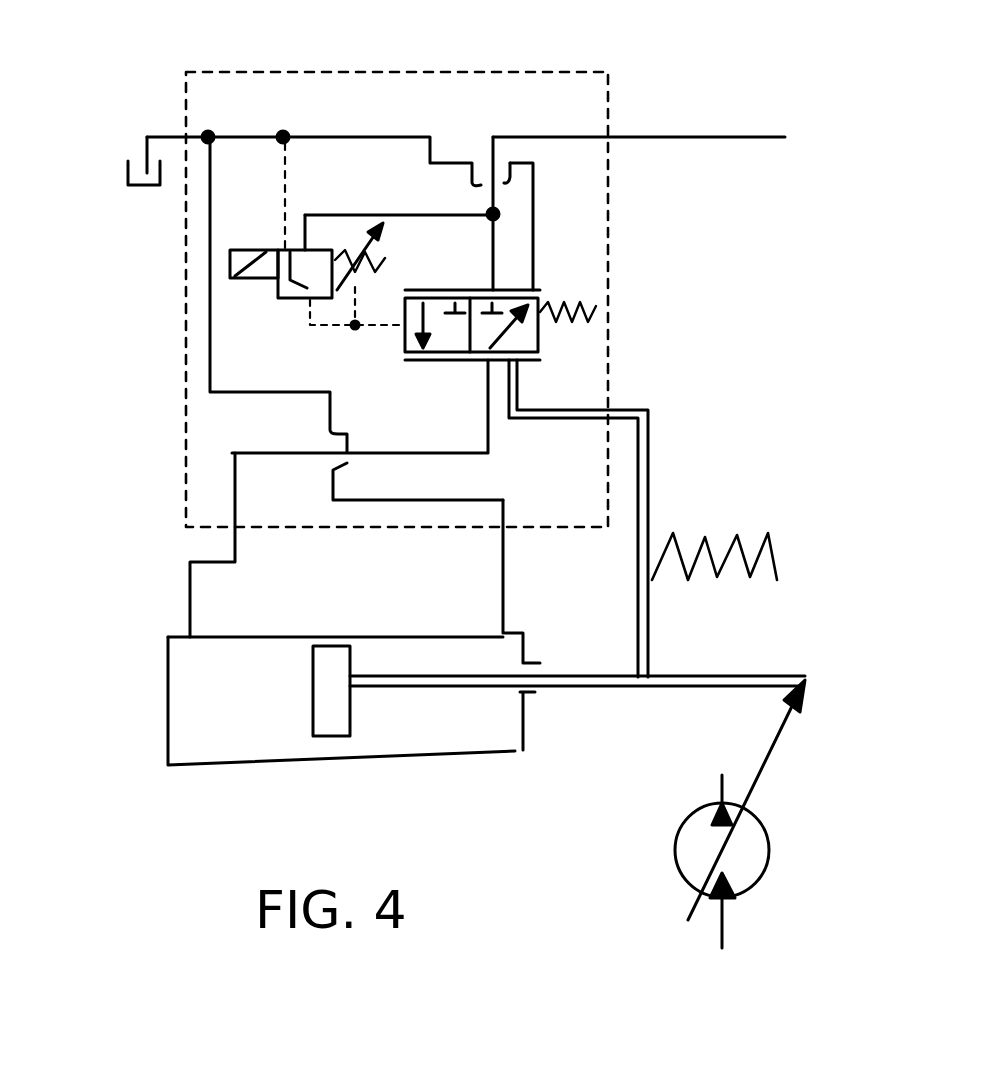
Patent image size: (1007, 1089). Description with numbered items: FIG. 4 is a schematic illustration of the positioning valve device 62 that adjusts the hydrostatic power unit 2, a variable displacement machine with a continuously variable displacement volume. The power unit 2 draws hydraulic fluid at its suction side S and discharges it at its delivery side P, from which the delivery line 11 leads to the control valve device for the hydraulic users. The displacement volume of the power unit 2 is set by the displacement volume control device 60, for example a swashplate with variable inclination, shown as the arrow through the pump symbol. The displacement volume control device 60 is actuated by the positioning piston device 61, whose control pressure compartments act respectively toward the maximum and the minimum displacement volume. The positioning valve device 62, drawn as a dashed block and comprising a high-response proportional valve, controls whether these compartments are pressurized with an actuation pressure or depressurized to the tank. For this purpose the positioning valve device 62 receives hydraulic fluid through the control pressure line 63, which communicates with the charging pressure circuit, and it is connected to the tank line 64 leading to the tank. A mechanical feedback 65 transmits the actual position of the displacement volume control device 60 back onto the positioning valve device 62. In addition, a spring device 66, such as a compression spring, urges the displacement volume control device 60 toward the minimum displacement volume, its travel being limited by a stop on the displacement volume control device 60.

The hydrostatic power unit 2 is at (672, 866).
The delivery line 11 is at (128, 168).
The displacement volume control device 60 is at (782, 732).
The positioning piston device 61 is at (326, 712).
The positioning valve device 62 is at (303, 72).
The control pressure line 63 is at (727, 137).
The tank line 64 is at (160, 137).
The mechanical feedback 65 is at (652, 443).
The spring device 66 is at (745, 533).
The delivery side P is at (724, 804).
The suction side S is at (732, 890).